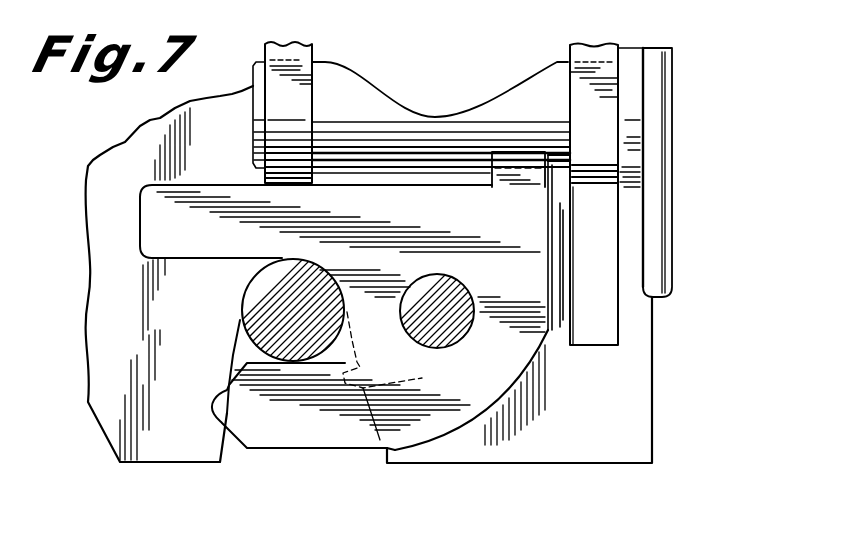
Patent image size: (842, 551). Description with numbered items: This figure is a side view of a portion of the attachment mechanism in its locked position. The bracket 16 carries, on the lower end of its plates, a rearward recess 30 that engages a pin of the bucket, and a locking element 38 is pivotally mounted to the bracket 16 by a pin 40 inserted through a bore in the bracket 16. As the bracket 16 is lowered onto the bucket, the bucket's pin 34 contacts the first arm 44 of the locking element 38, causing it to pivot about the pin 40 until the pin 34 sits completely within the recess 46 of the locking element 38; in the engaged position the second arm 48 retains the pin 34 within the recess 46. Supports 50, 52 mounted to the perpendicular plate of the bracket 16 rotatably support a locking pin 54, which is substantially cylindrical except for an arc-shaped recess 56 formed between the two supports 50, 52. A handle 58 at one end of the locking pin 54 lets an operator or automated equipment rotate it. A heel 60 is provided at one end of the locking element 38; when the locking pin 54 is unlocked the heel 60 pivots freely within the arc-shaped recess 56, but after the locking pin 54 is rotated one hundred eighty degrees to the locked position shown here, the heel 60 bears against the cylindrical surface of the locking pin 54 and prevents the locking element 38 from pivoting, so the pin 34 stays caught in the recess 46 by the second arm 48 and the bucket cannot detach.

The bracket 16 is at (637, 380).
The rearward recess 30 is at (396, 376).
The pin 34 is at (245, 343).
The locking element 38 is at (475, 420).
The pin 40 is at (443, 273).
The first arm 44 is at (163, 218).
The recess 46 is at (313, 270).
The second arm 48 is at (308, 450).
The support 50 is at (293, 62).
The support 52 is at (597, 63).
The locking pin 54 is at (337, 90).
The arc-shaped recess 56 is at (390, 107).
The handle 58 is at (672, 227).
The heel 60 is at (524, 162).